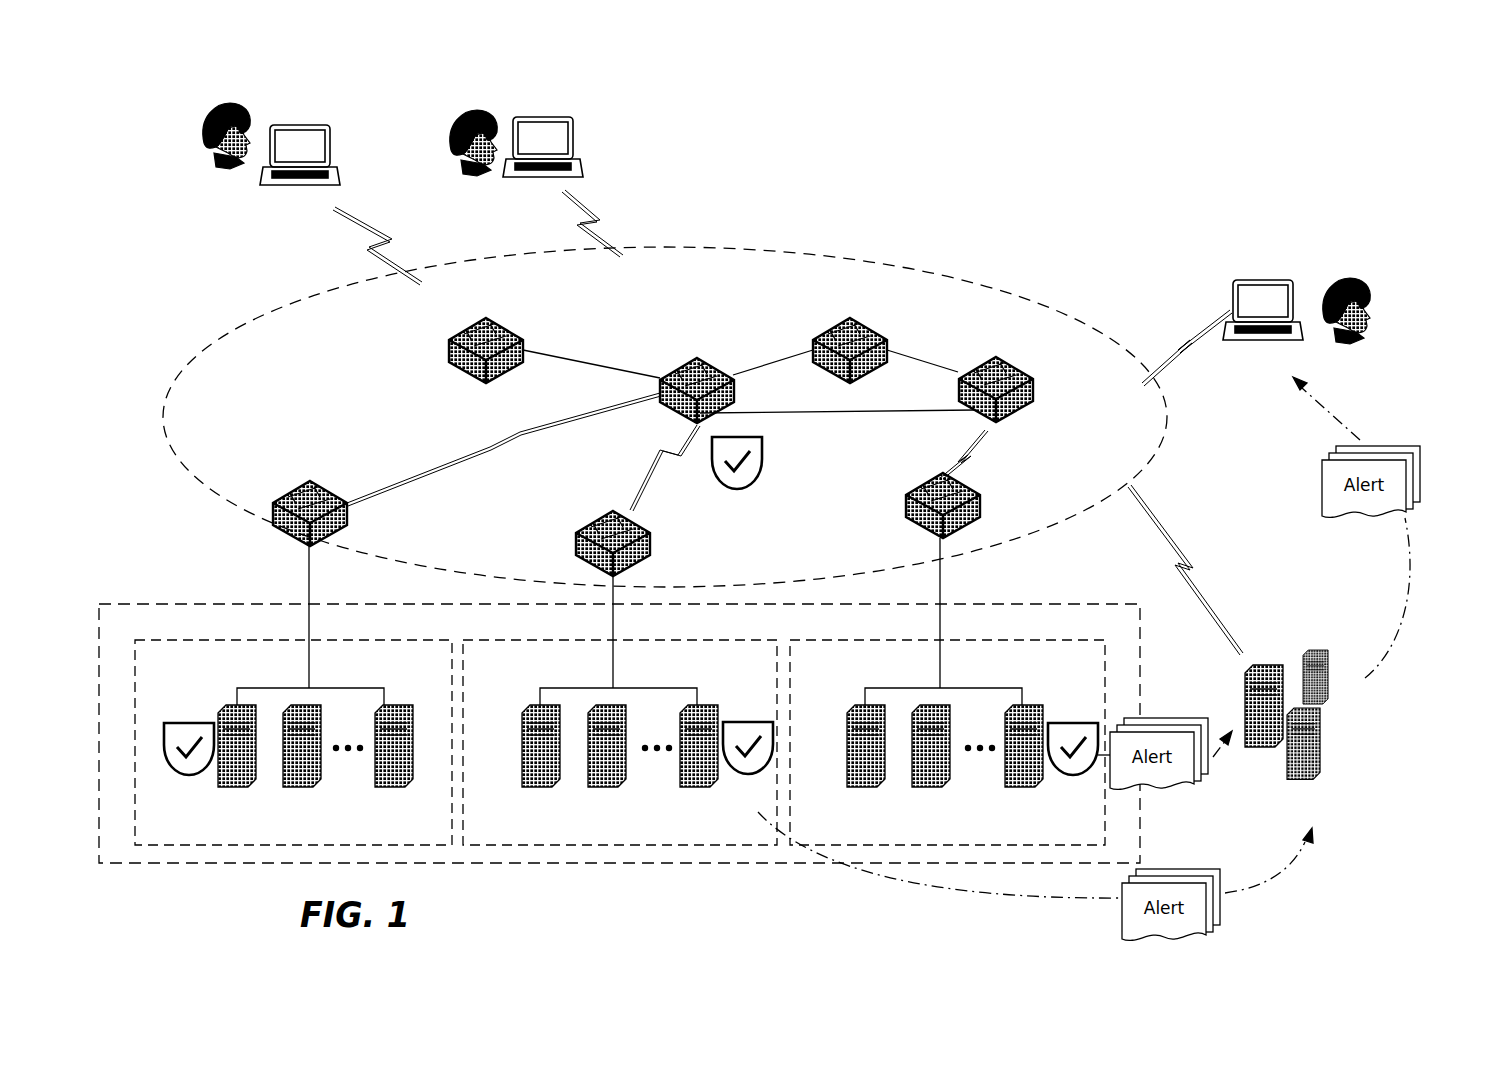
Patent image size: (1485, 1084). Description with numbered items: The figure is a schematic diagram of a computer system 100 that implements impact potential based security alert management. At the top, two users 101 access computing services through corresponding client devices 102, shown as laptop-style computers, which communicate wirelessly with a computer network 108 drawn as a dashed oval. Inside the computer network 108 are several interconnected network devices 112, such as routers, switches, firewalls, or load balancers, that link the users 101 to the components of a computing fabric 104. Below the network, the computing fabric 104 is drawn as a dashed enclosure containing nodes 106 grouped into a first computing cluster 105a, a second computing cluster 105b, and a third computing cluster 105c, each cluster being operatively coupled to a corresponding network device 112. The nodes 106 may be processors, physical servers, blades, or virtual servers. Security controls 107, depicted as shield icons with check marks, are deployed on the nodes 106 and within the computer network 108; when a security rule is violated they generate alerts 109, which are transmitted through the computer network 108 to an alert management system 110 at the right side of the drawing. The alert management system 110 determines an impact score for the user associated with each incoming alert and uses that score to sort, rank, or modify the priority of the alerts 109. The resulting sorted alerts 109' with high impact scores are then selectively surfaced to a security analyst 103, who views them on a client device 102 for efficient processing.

The computer system 100 is at (1352, 148).
The user 101 is at (190, 110).
The client device 102 is at (305, 125).
The security analyst 103 is at (1345, 277).
The computing fabric 104 is at (996, 264).
The first computing cluster 105a is at (165, 645).
The second computing cluster 105b is at (539, 645).
The third computing cluster 105c is at (875, 645).
The node 106 is at (217, 710).
The security control 107 is at (735, 490).
The computer network 108 is at (256, 389).
The alert 109 is at (1035, 803).
The sorted alert 109' is at (1385, 527).
The alert management system 110 is at (1328, 652).
The network device 112 is at (662, 376).